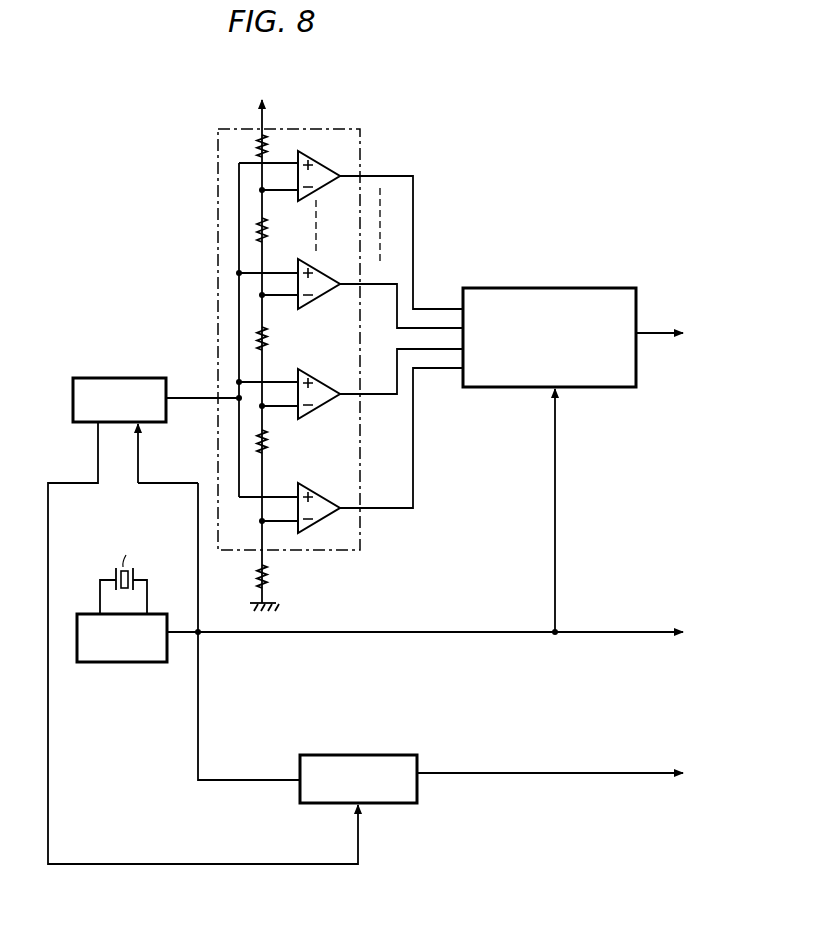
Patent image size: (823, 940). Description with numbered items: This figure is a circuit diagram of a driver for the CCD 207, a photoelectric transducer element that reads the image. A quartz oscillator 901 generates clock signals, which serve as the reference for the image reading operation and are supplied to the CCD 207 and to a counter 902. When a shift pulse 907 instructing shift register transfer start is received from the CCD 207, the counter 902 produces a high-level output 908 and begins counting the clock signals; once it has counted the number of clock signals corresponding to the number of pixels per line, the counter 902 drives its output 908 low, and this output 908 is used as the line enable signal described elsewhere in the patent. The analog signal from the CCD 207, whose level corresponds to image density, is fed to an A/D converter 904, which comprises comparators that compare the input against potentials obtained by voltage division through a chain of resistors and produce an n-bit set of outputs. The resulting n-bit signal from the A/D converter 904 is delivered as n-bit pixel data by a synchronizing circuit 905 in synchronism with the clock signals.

The A/D converter 904 is at (340, 127).
The synchronizing circuit 905 is at (586, 288).
The CCD 207 is at (128, 377).
The quartz oscillator 901 is at (133, 664).
The counter 902 is at (371, 755).
The shift pulse 907 is at (169, 862).
The output 908 is at (534, 772).